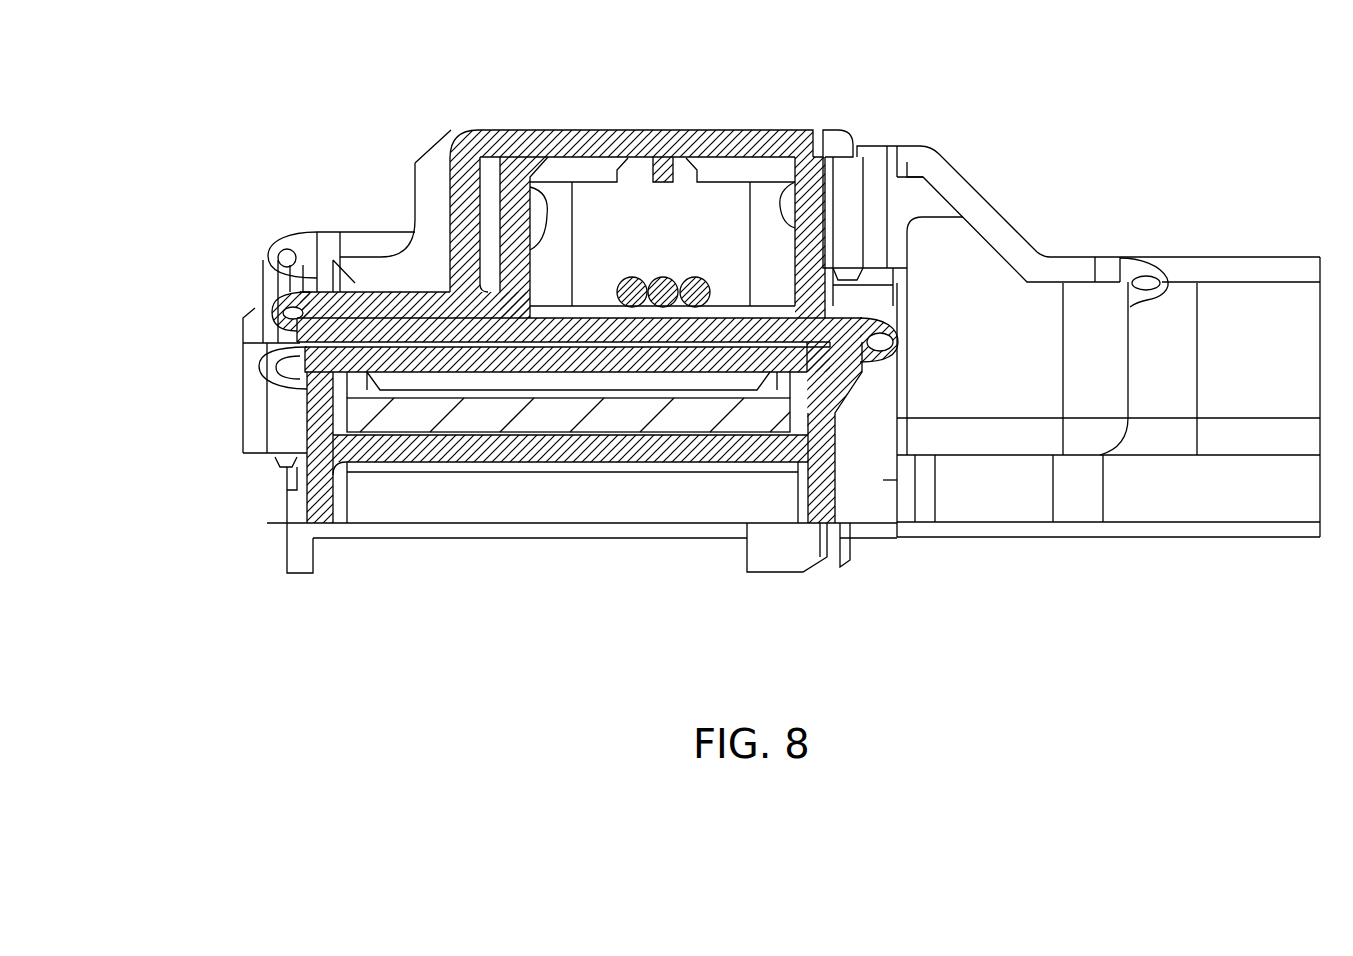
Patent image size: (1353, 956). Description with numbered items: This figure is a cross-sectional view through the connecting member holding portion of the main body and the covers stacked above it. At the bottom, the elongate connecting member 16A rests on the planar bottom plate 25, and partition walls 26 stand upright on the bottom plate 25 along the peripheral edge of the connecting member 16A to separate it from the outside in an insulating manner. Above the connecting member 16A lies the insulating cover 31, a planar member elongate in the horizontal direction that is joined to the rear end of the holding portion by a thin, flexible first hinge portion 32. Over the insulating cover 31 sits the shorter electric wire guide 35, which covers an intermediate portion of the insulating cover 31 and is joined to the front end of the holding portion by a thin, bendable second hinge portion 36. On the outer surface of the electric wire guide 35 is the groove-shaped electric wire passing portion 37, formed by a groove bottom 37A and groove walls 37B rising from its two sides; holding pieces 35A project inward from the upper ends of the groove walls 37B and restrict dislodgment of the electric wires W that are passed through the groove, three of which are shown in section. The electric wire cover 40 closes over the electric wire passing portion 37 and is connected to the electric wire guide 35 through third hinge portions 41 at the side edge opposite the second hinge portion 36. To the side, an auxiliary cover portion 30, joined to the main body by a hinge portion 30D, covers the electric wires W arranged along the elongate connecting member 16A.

The elongate connecting member 16A is at (657, 423).
The bottom plate 25 is at (595, 457).
The partition wall 26 is at (318, 408).
The auxiliary cover portion 30 is at (1033, 250).
The hinge portion 30D is at (1148, 268).
The insulating cover 31 is at (515, 362).
The first hinge portion 32 is at (260, 368).
The electric wire guide 35 is at (772, 333).
The holding piece 35A is at (553, 168).
The second hinge portion 36 is at (897, 337).
The electric wire passing portion 37 is at (838, 214).
The groove bottom 37A is at (750, 297).
The groove wall 37B is at (543, 217).
The electric wire cover 40 is at (573, 130).
The third hinge portion 41 is at (265, 312).
The electric wire W is at (696, 277).